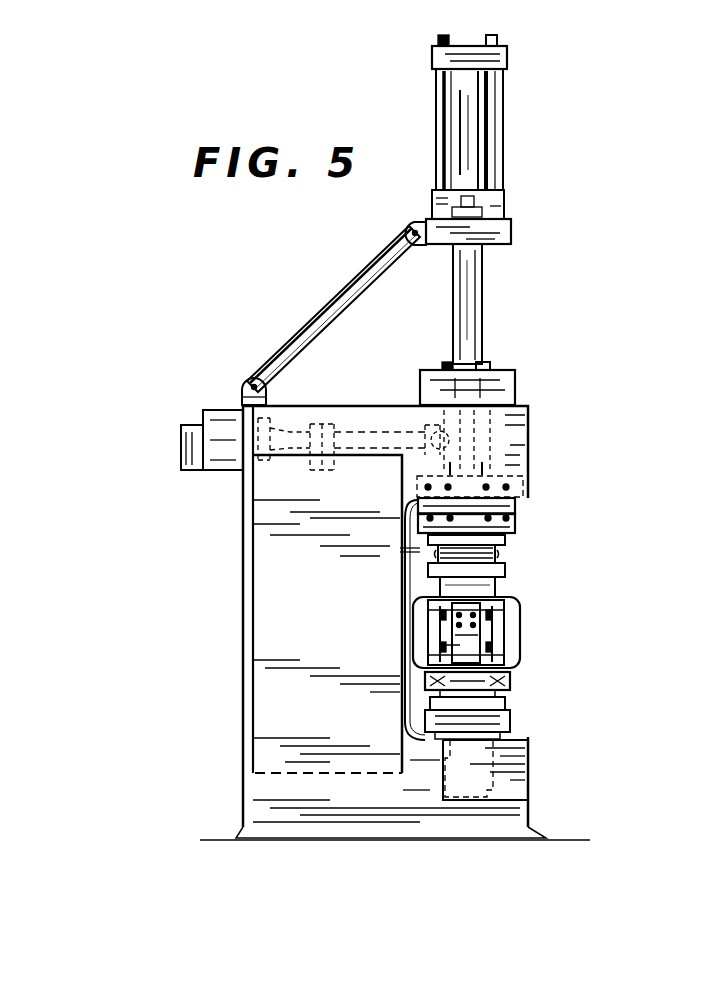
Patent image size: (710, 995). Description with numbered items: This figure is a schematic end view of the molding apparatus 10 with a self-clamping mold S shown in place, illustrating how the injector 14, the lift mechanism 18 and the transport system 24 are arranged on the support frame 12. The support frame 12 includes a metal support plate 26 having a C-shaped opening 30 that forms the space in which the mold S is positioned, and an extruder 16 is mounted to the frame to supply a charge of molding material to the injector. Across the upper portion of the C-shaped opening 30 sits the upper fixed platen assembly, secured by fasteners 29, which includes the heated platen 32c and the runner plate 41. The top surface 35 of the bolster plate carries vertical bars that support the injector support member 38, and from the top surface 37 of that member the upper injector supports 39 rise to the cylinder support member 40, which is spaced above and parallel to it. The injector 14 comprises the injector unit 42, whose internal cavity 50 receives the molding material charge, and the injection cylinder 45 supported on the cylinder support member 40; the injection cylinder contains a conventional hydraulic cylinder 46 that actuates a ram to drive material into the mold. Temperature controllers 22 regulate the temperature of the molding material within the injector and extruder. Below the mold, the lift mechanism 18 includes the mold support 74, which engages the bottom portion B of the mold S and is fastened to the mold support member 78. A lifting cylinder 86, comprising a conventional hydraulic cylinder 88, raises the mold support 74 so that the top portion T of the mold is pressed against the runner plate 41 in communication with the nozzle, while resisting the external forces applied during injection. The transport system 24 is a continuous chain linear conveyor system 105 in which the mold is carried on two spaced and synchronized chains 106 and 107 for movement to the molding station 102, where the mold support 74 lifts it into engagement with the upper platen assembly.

The apparatus 10 is at (607, 193).
The support frame 12 is at (252, 604).
The injector 14 is at (543, 254).
The extruder 16 is at (263, 342).
The lift mechanism 18 is at (598, 701).
The temperature controllers 22 is at (516, 512).
The transport system 24 is at (588, 629).
The support plate 26 is at (530, 432).
The fasteners 29 is at (492, 201).
The C-shaped opening 30 is at (402, 586).
The heated platen 32c is at (518, 513).
The top surface 35 is at (528, 446).
The top surface 37 is at (500, 368).
The injector support member 38 is at (508, 382).
The injector supports 39 is at (482, 274).
The cylinder support member 40 is at (511, 233).
The runner plate 41 is at (518, 532).
The injector unit 42 is at (510, 412).
The injection cylinder 45 is at (504, 138).
The hydraulic cylinder 46 is at (507, 58).
The internal cavity 50 is at (415, 415).
The mold support 74 is at (445, 640).
The mold support member 78 is at (420, 705).
The lifting cylinder 86 is at (498, 786).
The hydraulic cylinder 88 is at (528, 750).
The molding station 102 is at (400, 550).
The continuous chain linear conveyor system 105 is at (520, 658).
The chain 106 is at (456, 636).
The chain 107 is at (520, 612).
The top portion T is at (505, 538).
The self-clamping mold S is at (510, 557).
The bottom portion B is at (505, 572).